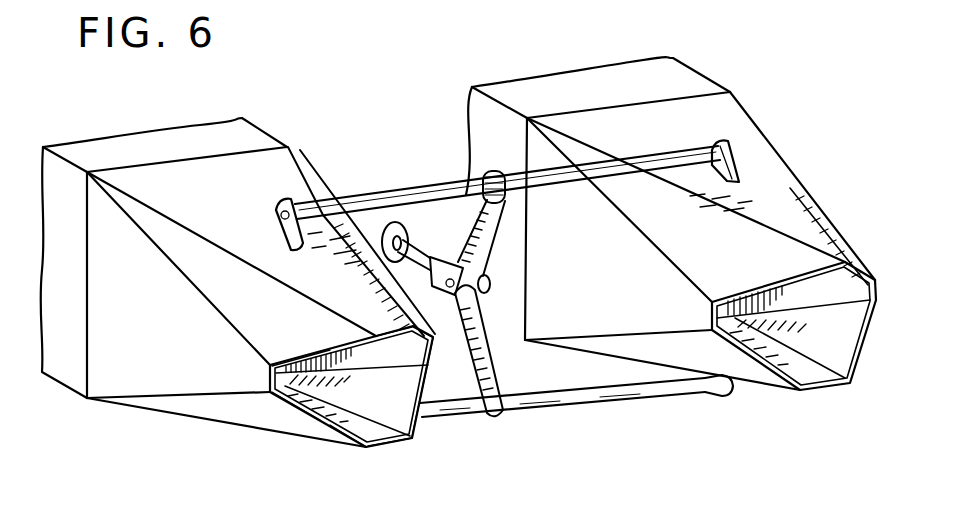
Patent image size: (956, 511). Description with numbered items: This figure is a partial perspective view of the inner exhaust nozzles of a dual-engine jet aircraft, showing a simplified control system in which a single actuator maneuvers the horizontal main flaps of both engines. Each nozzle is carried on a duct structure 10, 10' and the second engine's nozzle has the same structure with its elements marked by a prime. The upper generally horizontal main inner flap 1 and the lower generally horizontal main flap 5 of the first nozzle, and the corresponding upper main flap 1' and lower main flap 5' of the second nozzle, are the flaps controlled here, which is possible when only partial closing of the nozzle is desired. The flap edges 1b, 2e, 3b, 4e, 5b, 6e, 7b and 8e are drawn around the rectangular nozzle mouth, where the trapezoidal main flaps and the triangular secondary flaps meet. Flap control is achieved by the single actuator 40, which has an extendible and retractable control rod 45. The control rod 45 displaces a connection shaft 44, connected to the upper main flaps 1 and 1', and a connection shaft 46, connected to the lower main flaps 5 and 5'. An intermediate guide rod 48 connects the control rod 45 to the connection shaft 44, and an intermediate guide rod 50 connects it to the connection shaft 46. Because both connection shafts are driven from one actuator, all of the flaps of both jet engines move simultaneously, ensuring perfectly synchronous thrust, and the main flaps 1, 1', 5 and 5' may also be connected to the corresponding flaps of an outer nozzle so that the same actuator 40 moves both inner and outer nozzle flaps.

The container block 10 is at (164, 242).
The upper generally horizontal main inner flap 1 is at (231, 309).
The container wall 1b is at (380, 330).
The lower generally horizontal main flap 5 is at (351, 405).
The spout top wall 2e is at (317, 350).
The spout side wall 3b is at (267, 375).
The spout lower wall 4e is at (293, 412).
The spout bottom edge 5b is at (363, 458).
The spout bottom wall 6e is at (430, 398).
The spout right wall 7b is at (438, 352).
The spout top edge 8e is at (438, 318).
The actuator 40 is at (327, 190).
The connection shaft 44 is at (425, 196).
The control rod 45 is at (420, 253).
The intermediate guide rod 48 is at (483, 222).
The intermediate guide rod 50 is at (485, 366).
The connection shaft 46 is at (602, 392).
The second container block 10' is at (670, 187).
The upper generally horizontal main inner flap of second engine nozzle 1' is at (685, 252).
The lower generally horizontal main flap of second engine nozzle 5' is at (794, 353).